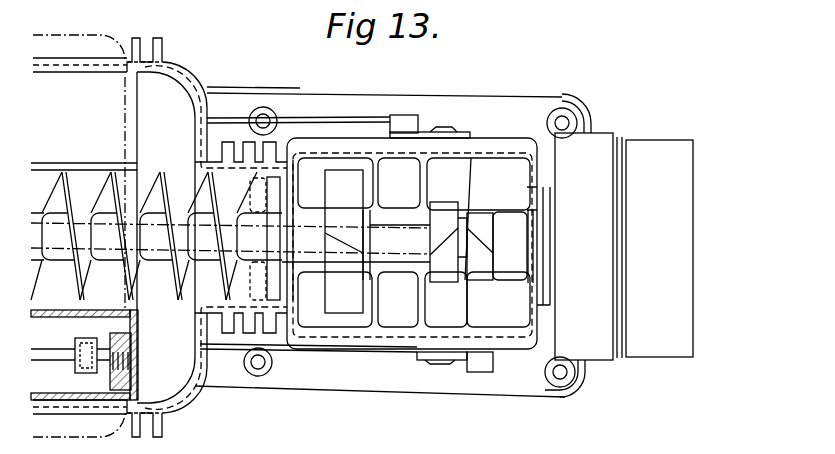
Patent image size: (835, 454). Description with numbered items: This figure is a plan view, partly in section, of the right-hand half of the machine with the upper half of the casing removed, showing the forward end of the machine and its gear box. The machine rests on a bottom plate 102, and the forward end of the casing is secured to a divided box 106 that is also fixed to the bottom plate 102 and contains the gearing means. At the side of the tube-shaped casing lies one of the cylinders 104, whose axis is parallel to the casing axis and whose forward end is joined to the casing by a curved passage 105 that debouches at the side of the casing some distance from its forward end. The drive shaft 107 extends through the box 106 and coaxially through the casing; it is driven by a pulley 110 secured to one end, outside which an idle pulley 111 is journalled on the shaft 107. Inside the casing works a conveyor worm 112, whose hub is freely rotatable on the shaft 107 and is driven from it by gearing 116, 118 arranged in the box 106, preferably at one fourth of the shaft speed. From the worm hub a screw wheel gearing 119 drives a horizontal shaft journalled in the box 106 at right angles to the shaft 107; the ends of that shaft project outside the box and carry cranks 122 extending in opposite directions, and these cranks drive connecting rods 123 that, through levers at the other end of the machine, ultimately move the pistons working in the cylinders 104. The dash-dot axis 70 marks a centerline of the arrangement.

The pipe axis 70 is at (63, 40).
The bottom plate 102 is at (439, 245).
The cylinder 104 is at (160, 272).
The curved passage 105 is at (346, 237).
The divided box 106 is at (516, 346).
The drive shaft 107 is at (356, 243).
The pulley 110 is at (588, 246).
The idle pulley 111 is at (659, 248).
The conveyor worm 112 is at (210, 183).
The gearing 116 is at (480, 246).
The gearing 118 is at (347, 241).
The screw wheel gearing 119 is at (447, 281).
The crank 122 is at (436, 131).
The connecting rod 123 is at (350, 376).